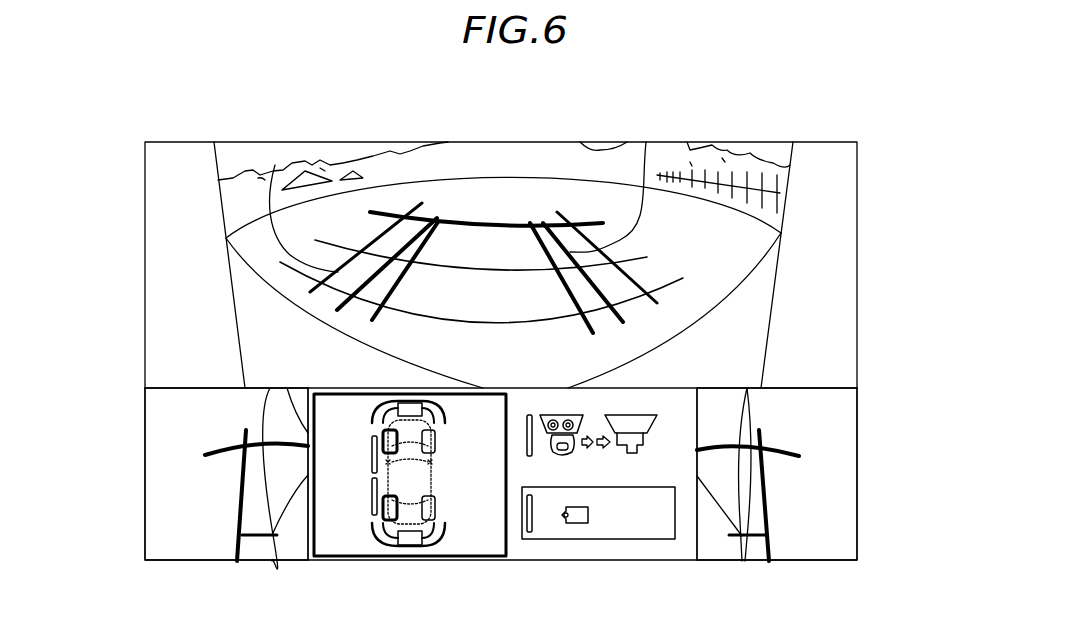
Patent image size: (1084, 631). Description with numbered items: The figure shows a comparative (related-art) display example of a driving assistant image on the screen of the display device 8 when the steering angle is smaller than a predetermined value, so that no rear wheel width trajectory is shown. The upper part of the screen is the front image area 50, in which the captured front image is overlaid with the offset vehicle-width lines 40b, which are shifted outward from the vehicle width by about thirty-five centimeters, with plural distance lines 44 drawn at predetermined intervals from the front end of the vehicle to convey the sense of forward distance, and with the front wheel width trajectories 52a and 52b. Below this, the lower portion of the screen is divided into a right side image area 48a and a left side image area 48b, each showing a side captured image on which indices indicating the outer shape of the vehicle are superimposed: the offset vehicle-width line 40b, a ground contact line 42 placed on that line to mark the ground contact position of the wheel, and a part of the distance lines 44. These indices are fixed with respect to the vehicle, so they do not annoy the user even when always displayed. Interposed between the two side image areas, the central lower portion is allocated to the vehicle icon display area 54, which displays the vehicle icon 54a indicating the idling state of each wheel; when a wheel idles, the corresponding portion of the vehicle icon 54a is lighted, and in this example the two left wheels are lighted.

The display device 8 is at (841, 144).
The front image area 50 is at (228, 152).
The distance lines 44 is at (530, 318).
The front wheel width trajectory 52a is at (540, 222).
The front wheel width trajectory 52b is at (428, 216).
The offset vehicle-width line 40b is at (275, 176).
The ground contact line 42 is at (247, 540).
The right side image area 48a is at (830, 538).
The left side image area 48b is at (177, 536).
The vehicle icon display area 54 is at (540, 547).
The vehicle icon 54a is at (385, 537).